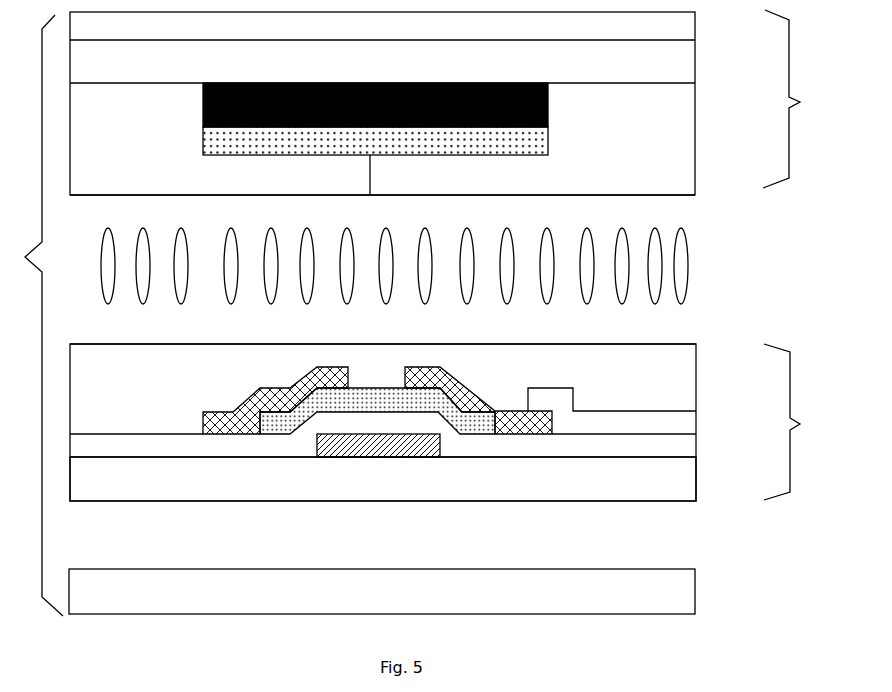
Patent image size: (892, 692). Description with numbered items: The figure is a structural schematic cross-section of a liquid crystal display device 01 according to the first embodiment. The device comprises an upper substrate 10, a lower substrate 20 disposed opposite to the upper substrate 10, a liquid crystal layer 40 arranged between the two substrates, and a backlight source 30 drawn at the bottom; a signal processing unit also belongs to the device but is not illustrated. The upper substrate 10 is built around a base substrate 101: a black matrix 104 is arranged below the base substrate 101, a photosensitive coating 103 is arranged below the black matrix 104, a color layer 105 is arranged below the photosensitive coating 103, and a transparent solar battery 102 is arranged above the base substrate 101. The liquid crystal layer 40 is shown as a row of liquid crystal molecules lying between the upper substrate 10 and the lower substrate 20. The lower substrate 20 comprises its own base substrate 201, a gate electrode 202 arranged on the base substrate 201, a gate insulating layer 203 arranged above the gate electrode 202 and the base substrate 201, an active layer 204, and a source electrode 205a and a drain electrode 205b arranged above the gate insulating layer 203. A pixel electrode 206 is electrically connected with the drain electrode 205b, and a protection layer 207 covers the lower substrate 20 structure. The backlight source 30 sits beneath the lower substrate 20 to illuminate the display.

The liquid crystal display device 01 is at (33, 315).
The upper substrate 10 is at (447, 102).
The base substrate 101 is at (650, 56).
The transparent solar battery 102 is at (652, 22).
The photosensitive coating 103 is at (548, 140).
The black matrix 104 is at (548, 110).
The color layer 105 is at (530, 180).
The liquid crystal layer 40 is at (682, 258).
The lower substrate 20 is at (451, 422).
The base substrate 201 is at (652, 480).
The gate electrode 202 is at (382, 457).
The gate insulating layer 203 is at (652, 444).
The active layer 204 is at (290, 434).
The source electrode 205a is at (228, 434).
The drain electrode 205b is at (522, 434).
The pixel electrode 206 is at (652, 420).
The protection layer 207 is at (652, 368).
The backlight source 30 is at (650, 589).